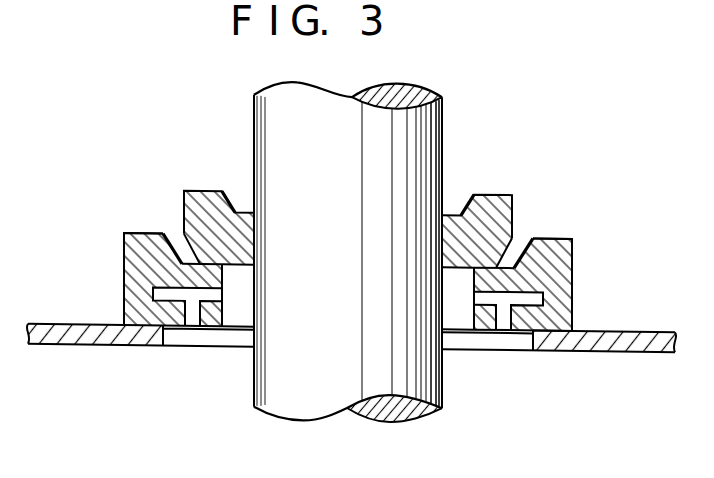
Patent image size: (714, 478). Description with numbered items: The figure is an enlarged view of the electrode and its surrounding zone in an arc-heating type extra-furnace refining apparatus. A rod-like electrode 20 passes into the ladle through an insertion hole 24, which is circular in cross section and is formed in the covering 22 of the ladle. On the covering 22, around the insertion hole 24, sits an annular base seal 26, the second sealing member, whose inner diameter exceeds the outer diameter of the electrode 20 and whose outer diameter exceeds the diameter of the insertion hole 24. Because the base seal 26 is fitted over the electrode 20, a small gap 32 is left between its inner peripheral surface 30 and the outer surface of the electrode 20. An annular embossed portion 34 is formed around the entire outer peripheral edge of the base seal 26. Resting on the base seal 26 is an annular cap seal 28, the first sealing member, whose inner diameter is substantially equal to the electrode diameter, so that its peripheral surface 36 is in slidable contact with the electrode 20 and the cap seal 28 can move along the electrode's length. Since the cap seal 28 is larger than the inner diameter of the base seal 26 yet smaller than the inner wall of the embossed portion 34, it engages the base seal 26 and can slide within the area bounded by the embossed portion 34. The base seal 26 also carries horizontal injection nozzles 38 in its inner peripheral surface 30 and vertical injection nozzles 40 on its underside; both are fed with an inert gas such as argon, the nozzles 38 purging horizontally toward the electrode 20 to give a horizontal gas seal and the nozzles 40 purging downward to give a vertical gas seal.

The rod-like electrode 20 is at (268, 142).
The covering 22 is at (591, 343).
The insertion hole 24 is at (170, 347).
The base seal 26 is at (128, 280).
The cap seal 28 is at (202, 193).
The inner peripheral surface 30 is at (224, 277).
The small gap 32 is at (243, 311).
The annular embossed portion 34 is at (137, 244).
The inner peripheral surface of cap seal 36 is at (184, 208).
The horizontal injection nozzles 38 is at (473, 303).
The vertical injection nozzles 40 is at (508, 321).